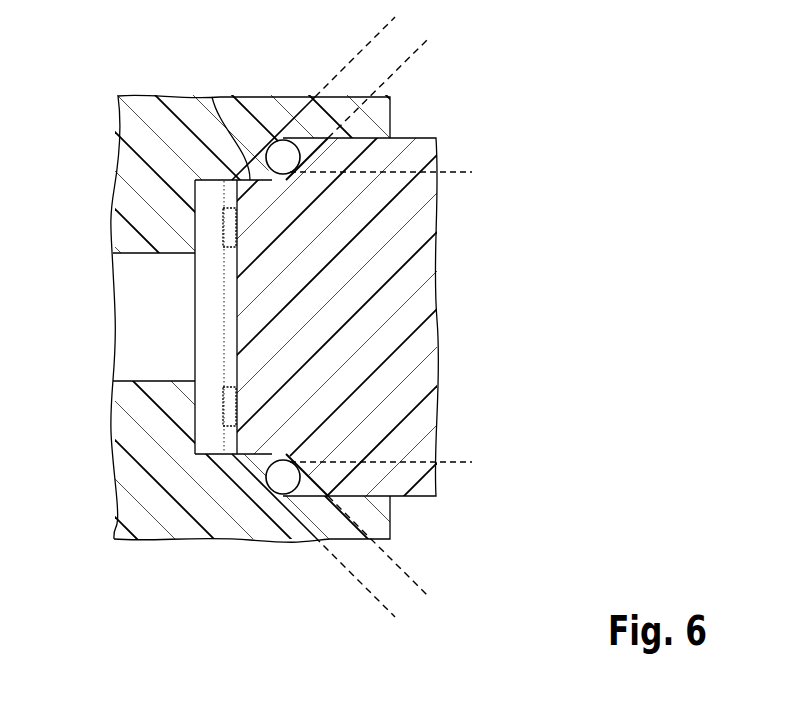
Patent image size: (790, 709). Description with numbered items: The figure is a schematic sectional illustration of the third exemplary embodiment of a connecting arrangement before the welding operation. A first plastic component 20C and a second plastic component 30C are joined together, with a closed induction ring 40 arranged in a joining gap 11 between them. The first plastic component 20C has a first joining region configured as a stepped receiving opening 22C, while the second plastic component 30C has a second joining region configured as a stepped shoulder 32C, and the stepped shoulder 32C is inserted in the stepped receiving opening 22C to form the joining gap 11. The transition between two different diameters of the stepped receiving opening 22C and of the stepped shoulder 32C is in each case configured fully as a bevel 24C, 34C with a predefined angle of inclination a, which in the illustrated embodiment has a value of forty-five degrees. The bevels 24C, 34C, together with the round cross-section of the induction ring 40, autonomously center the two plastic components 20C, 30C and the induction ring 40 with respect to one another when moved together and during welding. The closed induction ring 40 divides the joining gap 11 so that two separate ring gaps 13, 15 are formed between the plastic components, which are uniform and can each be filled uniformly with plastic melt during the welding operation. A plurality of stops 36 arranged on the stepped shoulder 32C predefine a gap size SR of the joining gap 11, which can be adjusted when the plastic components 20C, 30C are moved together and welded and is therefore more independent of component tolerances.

The joining gap 11 is at (336, 108).
The ring gap 13 is at (319, 142).
The ring gap 15 is at (212, 97).
The first plastic component 20C is at (132, 142).
The stepped receiving opening 22C is at (263, 120).
The bevel 24C is at (284, 157).
The second plastic component 30C is at (420, 377).
The stepped shoulder 32C is at (299, 188).
The bevel 34C is at (280, 494).
The stop 36 is at (218, 232).
The induction ring 40 is at (284, 495).
The gap size SR is at (395, 17).
The angle of inclination a is at (461, 172).